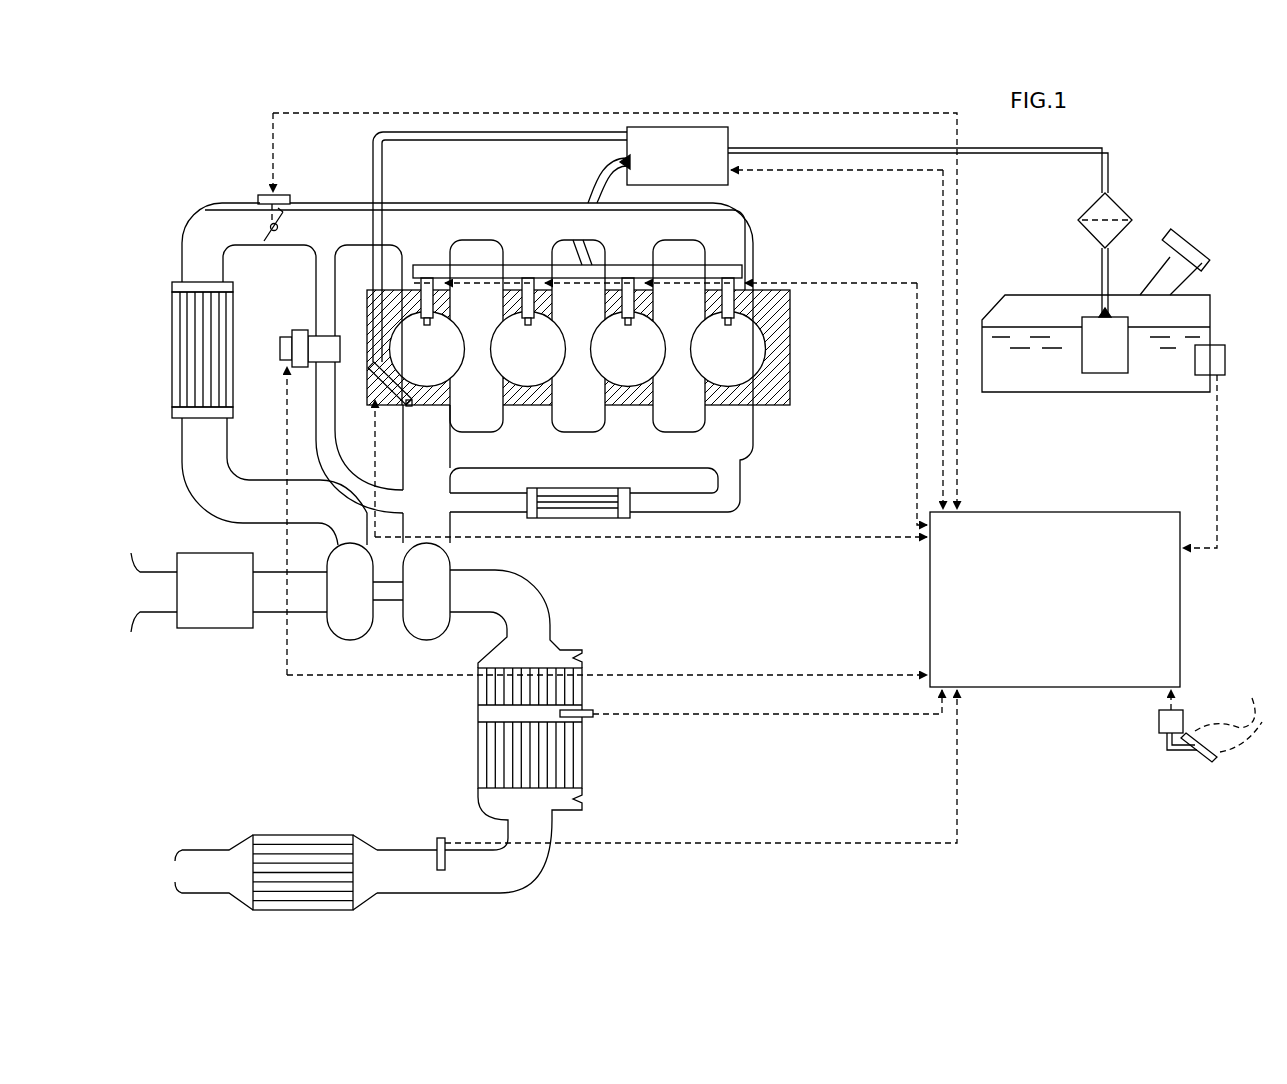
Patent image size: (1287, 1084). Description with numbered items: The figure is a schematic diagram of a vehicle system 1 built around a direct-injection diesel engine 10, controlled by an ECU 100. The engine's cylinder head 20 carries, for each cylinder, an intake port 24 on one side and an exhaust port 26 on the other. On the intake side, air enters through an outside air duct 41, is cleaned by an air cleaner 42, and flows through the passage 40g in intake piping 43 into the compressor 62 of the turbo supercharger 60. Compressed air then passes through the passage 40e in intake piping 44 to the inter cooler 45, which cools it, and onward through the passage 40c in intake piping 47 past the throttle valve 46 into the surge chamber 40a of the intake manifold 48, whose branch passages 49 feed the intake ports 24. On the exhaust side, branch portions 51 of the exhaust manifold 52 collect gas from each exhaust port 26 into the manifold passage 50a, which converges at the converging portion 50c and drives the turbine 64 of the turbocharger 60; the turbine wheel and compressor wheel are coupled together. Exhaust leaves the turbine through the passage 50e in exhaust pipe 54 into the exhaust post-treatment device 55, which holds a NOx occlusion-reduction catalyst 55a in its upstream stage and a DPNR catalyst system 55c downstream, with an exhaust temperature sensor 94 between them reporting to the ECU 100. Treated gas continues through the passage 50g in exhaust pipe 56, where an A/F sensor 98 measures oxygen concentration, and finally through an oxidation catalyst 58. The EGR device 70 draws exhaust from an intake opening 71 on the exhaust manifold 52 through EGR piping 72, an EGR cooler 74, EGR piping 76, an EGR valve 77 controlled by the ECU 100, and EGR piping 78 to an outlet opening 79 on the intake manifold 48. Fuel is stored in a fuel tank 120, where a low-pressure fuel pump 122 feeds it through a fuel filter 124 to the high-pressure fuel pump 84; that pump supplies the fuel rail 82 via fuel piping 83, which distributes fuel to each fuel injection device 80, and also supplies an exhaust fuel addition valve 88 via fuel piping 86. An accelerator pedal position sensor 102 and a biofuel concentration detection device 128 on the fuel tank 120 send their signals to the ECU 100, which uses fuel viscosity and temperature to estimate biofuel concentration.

The vehicle system 1 is at (1256, 161).
The diesel engine 10 is at (192, 750).
The cylinder head 20 is at (610, 336).
The intake port 24 is at (510, 304).
The exhaust port 26 is at (510, 395).
The outside air duct 41 is at (155, 566).
The air cleaner 42 is at (216, 632).
The intake piping 43 is at (262, 618).
The intake piping 44 is at (258, 476).
The inter cooler 45 is at (170, 313).
The throttle valve 46 is at (252, 191).
The intake piping 47 is at (180, 221).
The intake manifold 48 is at (761, 216).
The branch passage 49 is at (510, 254).
The branch portion 51 is at (510, 421).
The exhaust manifold 52 is at (760, 439).
The exhaust pipe 54 is at (537, 581).
The exhaust post-treatment device 55 is at (543, 728).
The NOx occlusion-reduction catalyst 55a is at (478, 706).
The DPNR catalyst system 55c is at (478, 750).
The exhaust pipe 56 is at (548, 876).
The oxidation catalyst 58 is at (306, 833).
The turbo supercharger 60 is at (388, 626).
The compressor 62 is at (352, 632).
The turbine 64 is at (428, 630).
The exhaust gas recirculation device 70 is at (760, 514).
The intake opening 71 is at (748, 481).
The EGR piping 72 is at (699, 520).
The EGR cooler 74 is at (607, 524).
The EGR piping 76 is at (318, 441).
The EGR valve 77 is at (356, 347).
The EGR piping 78 is at (311, 313).
The outlet opening 79 is at (308, 256).
The fuel injection device 80 is at (433, 326).
The fuel rail 82 is at (744, 271).
The fuel piping 83 is at (591, 176).
The high-pressure fuel pump 84 is at (722, 140).
The fuel piping 86 is at (368, 165).
The exhaust fuel addition valve 88 is at (379, 385).
The exhaust temperature sensor 94 is at (600, 705).
The A/F sensor 98 is at (442, 835).
The ECU 100 is at (726, 400).
The accelerator pedal position sensor 102 is at (1184, 718).
The fuel tank 120 is at (1222, 262).
The low-pressure fuel pump 122 is at (1090, 314).
The fuel filter 124 is at (1122, 200).
The biofuel concentration detection device 128 is at (1226, 356).
The surge chamber 40a is at (475, 250).
The passage 40c is at (257, 278).
The passage 40e is at (274, 481).
The passage 40g is at (290, 592).
The manifold passage 50a is at (584, 464).
The converging portion 50c is at (426, 474).
The passage 50e is at (512, 600).
The passage 50g is at (438, 866).